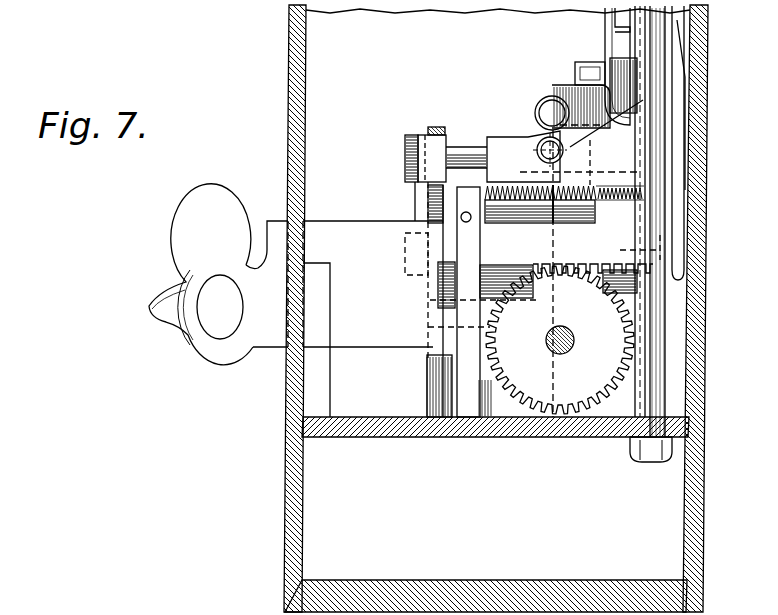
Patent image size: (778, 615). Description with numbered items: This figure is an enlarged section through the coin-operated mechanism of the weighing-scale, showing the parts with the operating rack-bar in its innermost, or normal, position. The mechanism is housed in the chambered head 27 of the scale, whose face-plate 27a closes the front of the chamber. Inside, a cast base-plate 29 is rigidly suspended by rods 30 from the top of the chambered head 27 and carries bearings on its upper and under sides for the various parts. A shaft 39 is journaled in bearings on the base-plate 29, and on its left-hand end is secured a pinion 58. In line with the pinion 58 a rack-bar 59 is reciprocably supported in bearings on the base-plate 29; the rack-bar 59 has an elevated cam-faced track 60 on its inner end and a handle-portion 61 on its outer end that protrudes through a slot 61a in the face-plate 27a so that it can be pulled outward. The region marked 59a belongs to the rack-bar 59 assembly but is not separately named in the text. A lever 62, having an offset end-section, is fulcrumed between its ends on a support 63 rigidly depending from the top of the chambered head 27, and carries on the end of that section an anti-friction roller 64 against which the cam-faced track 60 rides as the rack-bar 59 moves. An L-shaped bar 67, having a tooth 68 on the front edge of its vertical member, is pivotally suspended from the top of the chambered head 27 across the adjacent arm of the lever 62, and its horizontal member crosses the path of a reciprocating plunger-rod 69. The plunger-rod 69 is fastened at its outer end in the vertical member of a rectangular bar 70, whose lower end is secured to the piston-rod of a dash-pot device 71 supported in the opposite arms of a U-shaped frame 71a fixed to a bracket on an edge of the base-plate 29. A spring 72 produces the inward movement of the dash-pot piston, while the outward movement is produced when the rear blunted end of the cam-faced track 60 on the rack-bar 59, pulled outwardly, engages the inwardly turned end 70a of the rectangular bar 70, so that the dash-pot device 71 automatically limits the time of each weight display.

The chambered head 27 is at (487, 310).
The face-plate 27a is at (287, 524).
The base-plate 29 is at (398, 424).
The rods 30 is at (650, 332).
The shaft 39 is at (571, 333).
The pinion 58 is at (560, 340).
The rack-bar 59 is at (590, 214).
The rack bar plate 59a is at (490, 168).
The cam-faced track 60 is at (599, 140).
The handle-portion 61 is at (200, 275).
The slot 61a is at (287, 213).
The lever 62 is at (608, 44).
The support 63 is at (690, 52).
The anti-friction roller 64 is at (543, 128).
The L-shaped bar 67 is at (678, 75).
The tooth 68 is at (625, 30).
The plunger-rod 69 is at (468, 154).
The rectangular bar 70 is at (414, 191).
The inwardly turned end 70a is at (437, 145).
The dash-pot device 71 is at (497, 283).
The U-shaped frame 71a is at (478, 120).
The spring 72 is at (580, 202).